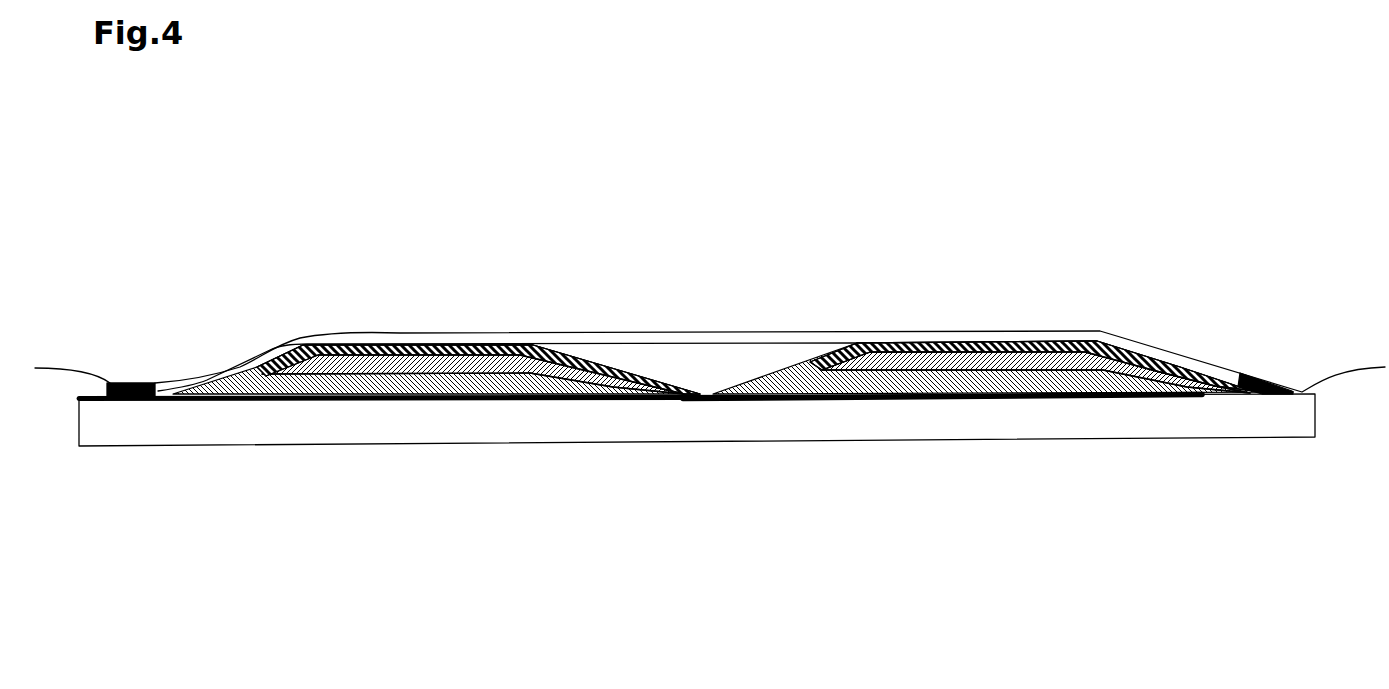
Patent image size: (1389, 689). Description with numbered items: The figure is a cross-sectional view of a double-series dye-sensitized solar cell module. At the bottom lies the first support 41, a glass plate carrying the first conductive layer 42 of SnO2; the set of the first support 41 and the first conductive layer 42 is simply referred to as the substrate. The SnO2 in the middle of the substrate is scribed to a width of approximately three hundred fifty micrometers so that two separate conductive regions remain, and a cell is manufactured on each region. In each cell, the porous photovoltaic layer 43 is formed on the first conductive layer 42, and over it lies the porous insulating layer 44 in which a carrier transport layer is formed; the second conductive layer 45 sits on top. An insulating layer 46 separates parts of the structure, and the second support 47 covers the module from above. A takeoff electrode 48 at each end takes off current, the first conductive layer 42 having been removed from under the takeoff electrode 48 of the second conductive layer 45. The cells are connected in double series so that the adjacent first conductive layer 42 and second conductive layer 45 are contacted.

The first support 41 is at (538, 420).
The first conductive layer 42 is at (367, 400).
The porous photovoltaic layer 43 is at (249, 398).
The porous insulating layer 44 is at (402, 363).
The second conductive layer 45 is at (307, 337).
The insulating layer 46 is at (634, 360).
The second support 47 is at (745, 340).
The takeoff electrode 48 is at (86, 367).